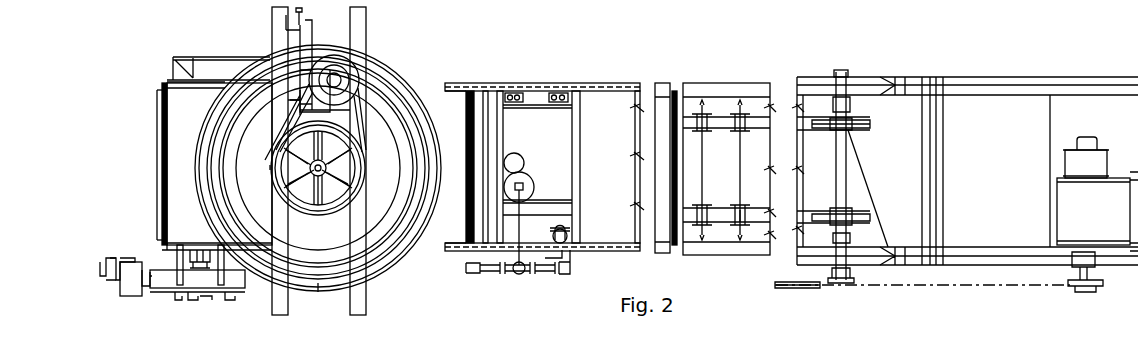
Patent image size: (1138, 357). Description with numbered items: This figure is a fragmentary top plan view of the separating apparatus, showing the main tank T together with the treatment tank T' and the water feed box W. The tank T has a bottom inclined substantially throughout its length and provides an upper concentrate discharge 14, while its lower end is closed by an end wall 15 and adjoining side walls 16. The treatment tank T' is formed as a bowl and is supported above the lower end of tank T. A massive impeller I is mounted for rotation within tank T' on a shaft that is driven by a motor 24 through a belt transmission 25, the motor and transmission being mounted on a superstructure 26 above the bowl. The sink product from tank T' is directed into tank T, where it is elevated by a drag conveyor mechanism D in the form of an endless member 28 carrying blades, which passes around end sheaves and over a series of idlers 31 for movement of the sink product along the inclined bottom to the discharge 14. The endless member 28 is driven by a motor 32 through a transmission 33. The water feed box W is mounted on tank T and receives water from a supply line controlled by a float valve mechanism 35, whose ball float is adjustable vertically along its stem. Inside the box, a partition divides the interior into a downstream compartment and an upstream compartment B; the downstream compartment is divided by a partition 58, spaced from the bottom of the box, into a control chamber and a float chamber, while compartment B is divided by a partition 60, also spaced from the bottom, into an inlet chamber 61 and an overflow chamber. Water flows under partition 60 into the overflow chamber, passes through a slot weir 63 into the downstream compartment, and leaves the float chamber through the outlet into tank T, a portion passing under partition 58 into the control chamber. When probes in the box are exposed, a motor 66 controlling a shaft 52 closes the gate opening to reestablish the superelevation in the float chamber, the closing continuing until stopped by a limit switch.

The end wall 15 is at (160, 168).
The side walls 16 is at (162, 80).
The shaft 52 is at (200, 252).
The motor 66 is at (107, 277).
The belt transmission 25 is at (282, 128).
The superstructure 26 is at (358, 293).
The impeller I is at (378, 130).
The motor 24 is at (333, 62).
The treatment tank T' is at (306, 318).
The upstream compartment B is at (560, 147).
The water feed box W is at (565, 84).
The partition 58 is at (526, 110).
The slot weir 63 is at (557, 108).
The partition 60 is at (555, 201).
The inlet chamber 61 is at (562, 218).
The float valve mechanism 35 is at (524, 275).
The tank T is at (715, 148).
The endless member 28 is at (731, 131).
The drag conveyor mechanism D is at (759, 204).
The concentrate discharge 14 is at (863, 168).
The idlers 31 is at (822, 130).
The motor 32 is at (1097, 214).
The transmission 33 is at (960, 289).